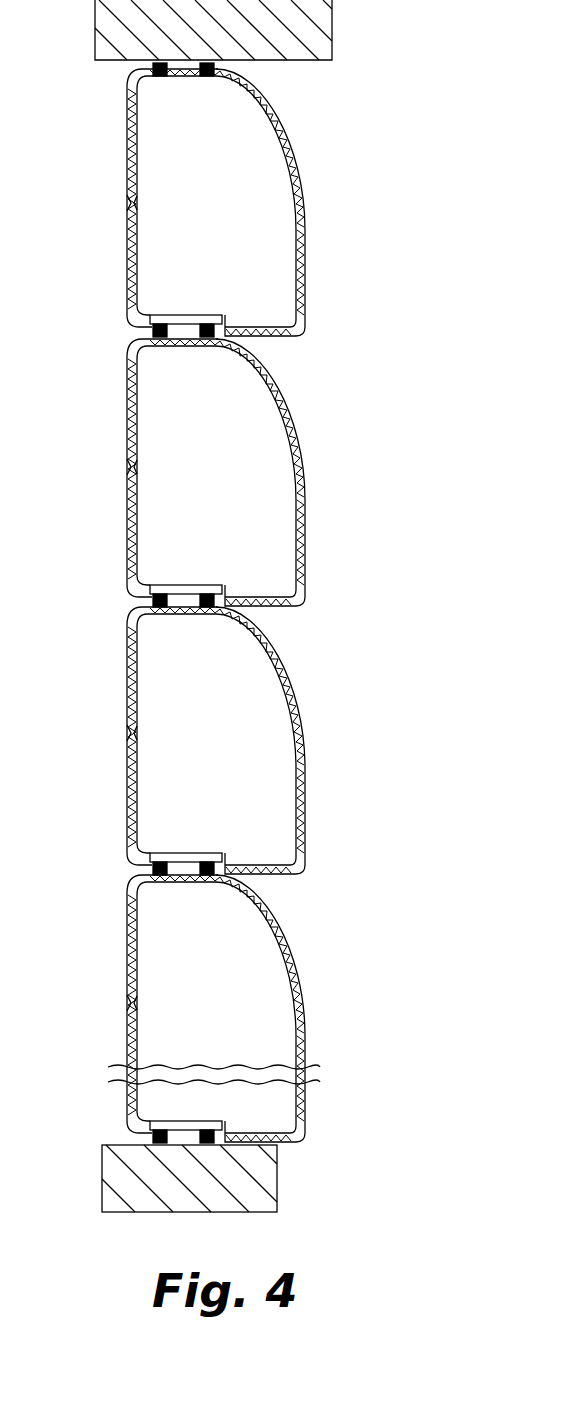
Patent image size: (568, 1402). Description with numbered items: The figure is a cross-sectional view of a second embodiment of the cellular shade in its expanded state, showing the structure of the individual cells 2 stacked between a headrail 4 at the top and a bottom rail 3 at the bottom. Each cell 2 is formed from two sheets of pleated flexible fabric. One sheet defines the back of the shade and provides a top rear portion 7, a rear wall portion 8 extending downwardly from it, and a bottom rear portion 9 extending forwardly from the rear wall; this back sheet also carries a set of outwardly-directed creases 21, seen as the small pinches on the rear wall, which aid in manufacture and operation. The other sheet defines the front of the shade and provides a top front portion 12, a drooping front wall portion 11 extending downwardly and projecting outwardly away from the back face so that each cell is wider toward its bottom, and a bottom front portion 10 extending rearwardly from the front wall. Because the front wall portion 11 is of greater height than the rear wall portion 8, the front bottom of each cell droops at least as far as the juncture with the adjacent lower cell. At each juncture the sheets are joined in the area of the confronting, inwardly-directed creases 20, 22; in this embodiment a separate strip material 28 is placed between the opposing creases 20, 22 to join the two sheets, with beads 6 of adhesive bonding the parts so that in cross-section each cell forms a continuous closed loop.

The cell 2 is at (97, 350).
The bottom rail 3 is at (247, 1177).
The headrail 4 is at (296, 33).
The bead of adhesive 6 is at (198, 72).
The top rear portion 7 is at (158, 72).
The rear wall portion 8 is at (128, 235).
The bottom rear portion 9 is at (148, 318).
The bottom front portion 10 is at (245, 328).
The front wall portion 11 is at (297, 186).
The top front portion 12 is at (222, 74).
The inwardly-directed crease 20 is at (150, 338).
The outwardly-directed crease 21 is at (123, 203).
The inwardly-directed crease 22 is at (207, 340).
The strip material 28 is at (165, 316).